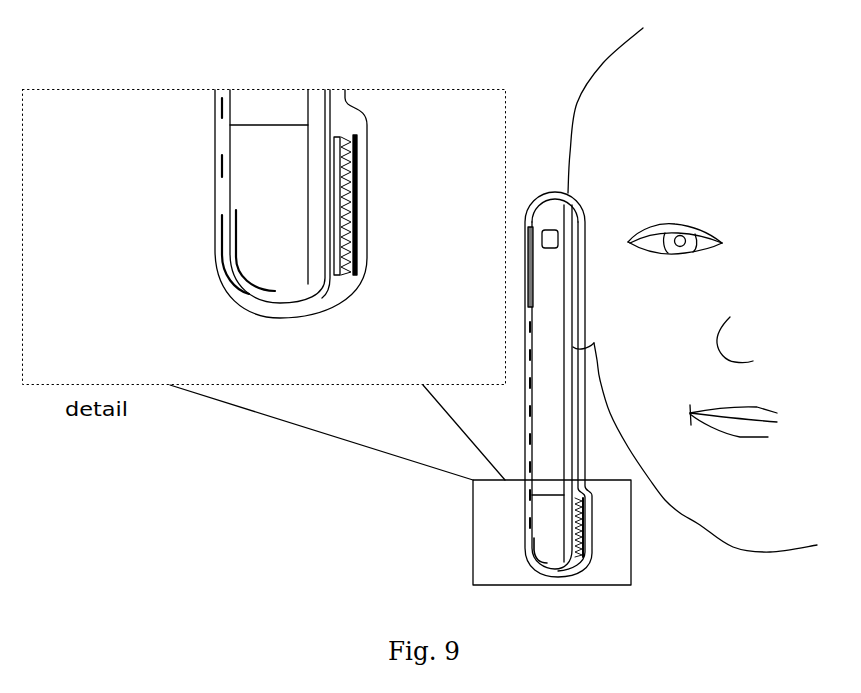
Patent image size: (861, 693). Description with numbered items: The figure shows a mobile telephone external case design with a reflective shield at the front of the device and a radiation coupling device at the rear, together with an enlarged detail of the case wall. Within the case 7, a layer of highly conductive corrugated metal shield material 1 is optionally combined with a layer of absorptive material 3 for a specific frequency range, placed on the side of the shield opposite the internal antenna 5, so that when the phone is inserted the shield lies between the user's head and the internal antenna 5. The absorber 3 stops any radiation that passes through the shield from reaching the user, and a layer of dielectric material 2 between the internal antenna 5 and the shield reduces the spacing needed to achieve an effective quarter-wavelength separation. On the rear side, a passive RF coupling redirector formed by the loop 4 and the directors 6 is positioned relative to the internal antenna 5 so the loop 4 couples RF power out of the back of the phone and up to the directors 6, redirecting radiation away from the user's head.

The metal shield 1 is at (355, 279).
The dielectric material 2 is at (336, 276).
The absorptive material 3 is at (359, 204).
The loop 4 is at (216, 237).
The internal antenna 5 is at (234, 209).
The directors 6 is at (216, 108).
The case 7 is at (219, 291).